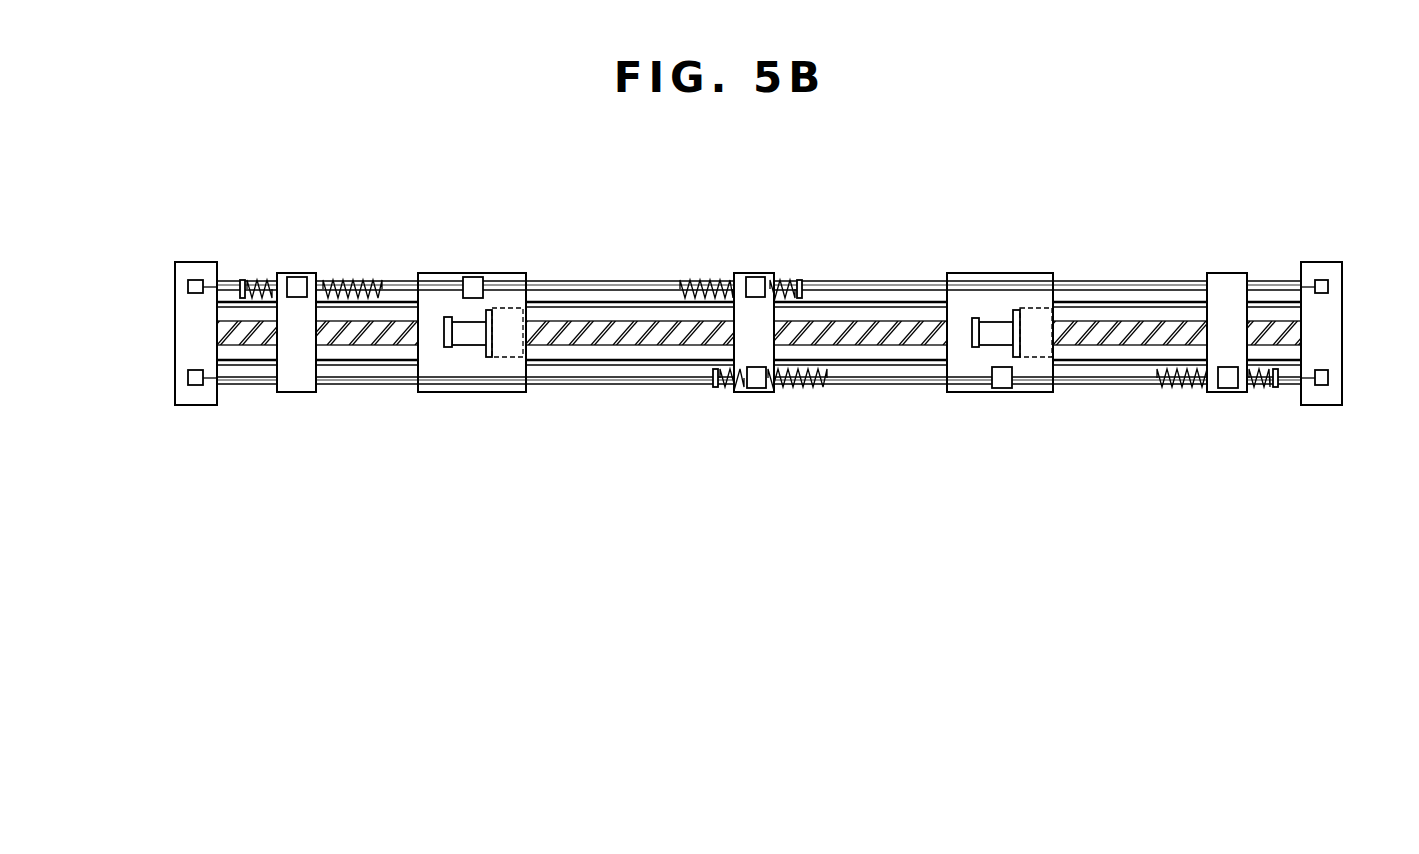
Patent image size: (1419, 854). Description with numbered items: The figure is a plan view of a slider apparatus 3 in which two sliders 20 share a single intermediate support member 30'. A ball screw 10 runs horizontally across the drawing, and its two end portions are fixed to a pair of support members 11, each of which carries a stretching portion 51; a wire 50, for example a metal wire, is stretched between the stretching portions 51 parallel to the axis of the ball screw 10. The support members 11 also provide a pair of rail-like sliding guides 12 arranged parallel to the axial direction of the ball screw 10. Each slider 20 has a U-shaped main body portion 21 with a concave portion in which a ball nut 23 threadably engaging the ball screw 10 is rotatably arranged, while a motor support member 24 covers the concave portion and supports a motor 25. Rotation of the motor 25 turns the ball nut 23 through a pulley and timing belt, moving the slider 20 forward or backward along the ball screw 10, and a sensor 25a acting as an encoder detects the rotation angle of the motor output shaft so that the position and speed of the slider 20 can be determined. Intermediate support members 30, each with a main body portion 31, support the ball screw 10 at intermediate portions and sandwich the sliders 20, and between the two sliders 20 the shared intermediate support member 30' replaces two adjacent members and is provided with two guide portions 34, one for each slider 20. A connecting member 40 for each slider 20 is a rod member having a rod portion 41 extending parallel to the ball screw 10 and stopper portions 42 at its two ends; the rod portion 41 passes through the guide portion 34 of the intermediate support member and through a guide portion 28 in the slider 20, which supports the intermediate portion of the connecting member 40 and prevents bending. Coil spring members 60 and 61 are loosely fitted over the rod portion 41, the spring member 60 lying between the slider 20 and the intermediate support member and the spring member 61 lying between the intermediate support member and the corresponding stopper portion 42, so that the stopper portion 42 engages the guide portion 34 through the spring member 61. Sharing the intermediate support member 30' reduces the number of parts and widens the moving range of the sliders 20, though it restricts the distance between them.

The slider apparatus 3 is at (133, 250).
The ball screw 10 is at (1330, 334).
The support member 11 is at (176, 338).
The sliding guide 12 is at (882, 302).
The slider 20 is at (507, 412).
The main body portion 21 is at (418, 394).
The ball nut 23 is at (515, 308).
The motor support member 24 is at (490, 310).
The motor 25 is at (468, 348).
The sensor 25a is at (446, 348).
The guide portion 28 is at (475, 280).
The intermediate support member 30 is at (757, 329).
The intermediate support member 30' is at (742, 205).
The main body portion 31 is at (310, 392).
The guide portion 34 is at (297, 275).
The connecting member 40 is at (634, 280).
The rod portion 41 is at (563, 281).
The stopper portion 42 is at (237, 278).
The wire 50 is at (1118, 281).
The stretching portion 51 is at (188, 287).
The spring member 60 is at (353, 278).
The spring member 61 is at (259, 280).